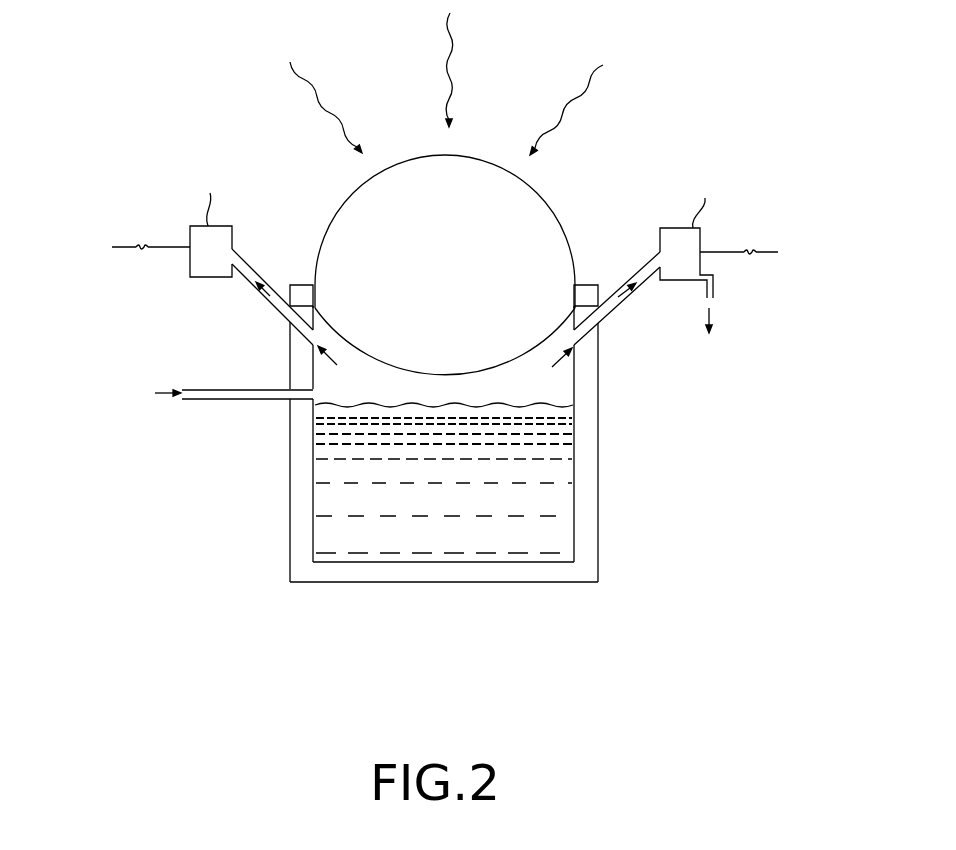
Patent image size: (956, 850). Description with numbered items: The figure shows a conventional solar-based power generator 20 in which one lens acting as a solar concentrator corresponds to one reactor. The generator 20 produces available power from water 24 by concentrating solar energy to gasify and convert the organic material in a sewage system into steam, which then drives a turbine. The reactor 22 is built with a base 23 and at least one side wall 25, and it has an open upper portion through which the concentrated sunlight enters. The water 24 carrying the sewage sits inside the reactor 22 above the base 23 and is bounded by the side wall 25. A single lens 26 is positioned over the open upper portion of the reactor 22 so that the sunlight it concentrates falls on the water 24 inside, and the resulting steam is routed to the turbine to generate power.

The solar-based power generator 20 is at (680, 592).
The reactor 22 is at (598, 518).
The base 23 is at (512, 583).
The water 24 is at (525, 545).
The side wall 25 is at (598, 408).
The lens 26 is at (562, 226).